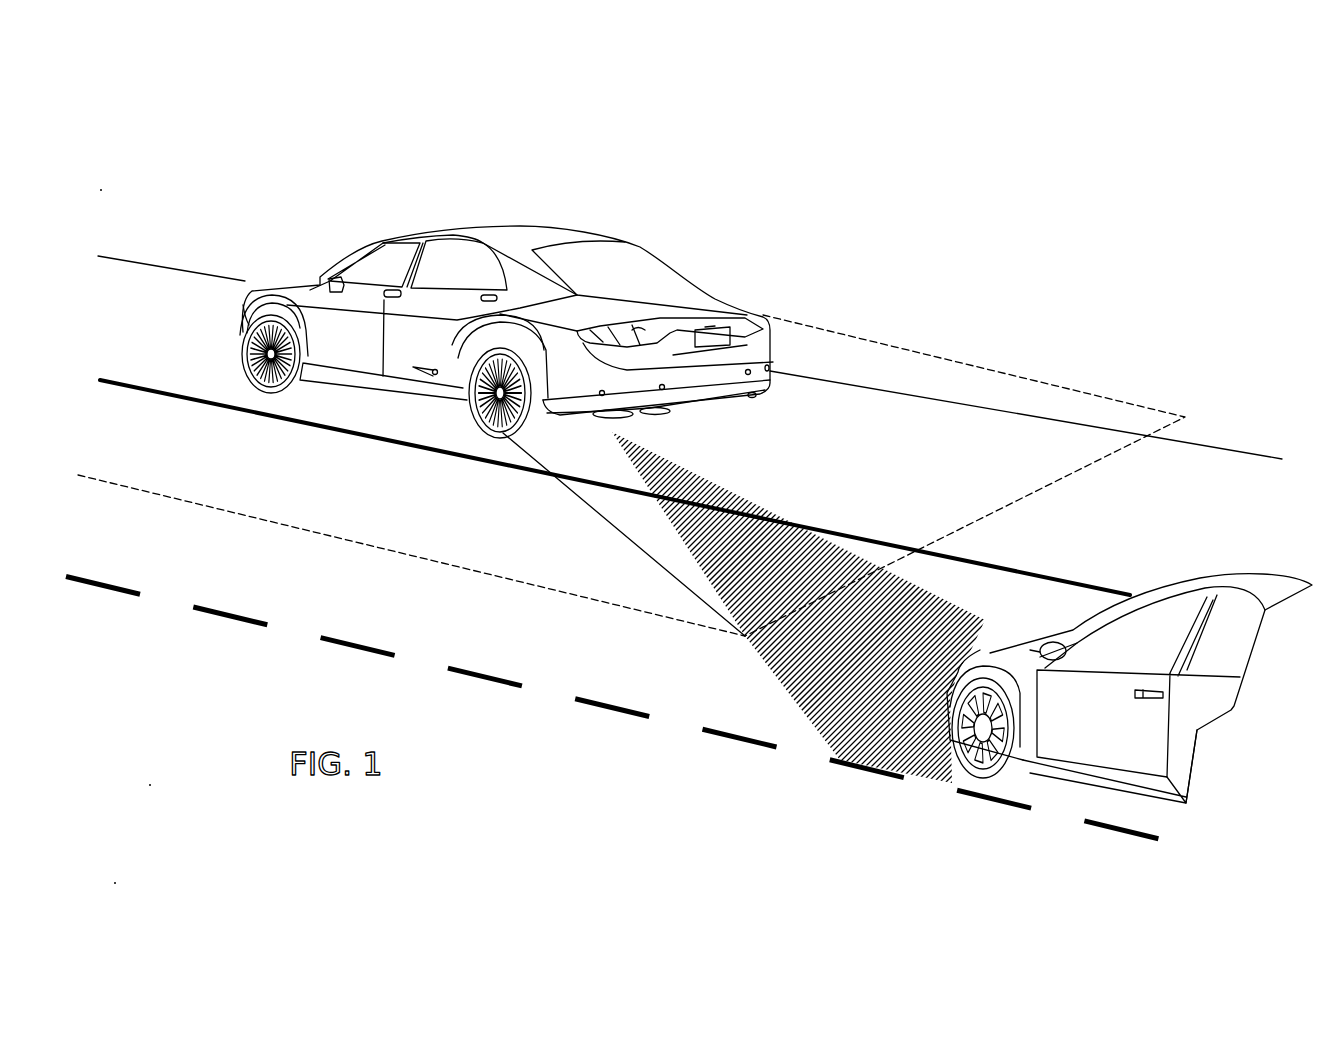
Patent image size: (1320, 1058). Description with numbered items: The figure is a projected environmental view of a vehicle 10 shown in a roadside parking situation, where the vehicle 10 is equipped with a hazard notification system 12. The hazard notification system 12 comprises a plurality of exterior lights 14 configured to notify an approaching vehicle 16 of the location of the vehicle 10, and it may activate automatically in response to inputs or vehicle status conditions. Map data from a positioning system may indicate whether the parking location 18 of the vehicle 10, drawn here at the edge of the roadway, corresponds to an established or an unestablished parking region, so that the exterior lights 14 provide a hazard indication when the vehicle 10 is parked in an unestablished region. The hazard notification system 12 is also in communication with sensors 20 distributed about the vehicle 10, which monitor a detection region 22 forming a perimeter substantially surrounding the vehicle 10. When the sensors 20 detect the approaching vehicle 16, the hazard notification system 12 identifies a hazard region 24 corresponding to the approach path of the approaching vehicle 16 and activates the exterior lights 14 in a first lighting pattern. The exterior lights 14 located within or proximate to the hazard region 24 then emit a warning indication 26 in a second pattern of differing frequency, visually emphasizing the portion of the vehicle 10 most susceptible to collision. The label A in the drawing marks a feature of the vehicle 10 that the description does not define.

The vehicle 10 is at (327, 148).
The hazard notification system 12 is at (468, 213).
The exterior lights 14 is at (322, 275).
The approaching vehicle 16 is at (1222, 585).
The parking location 18 is at (187, 392).
The sensors 20 is at (298, 280).
The detection region 22 is at (974, 360).
The hazard region 24 is at (795, 682).
The warning indication 26 is at (638, 328).
The A-pillar A is at (377, 260).